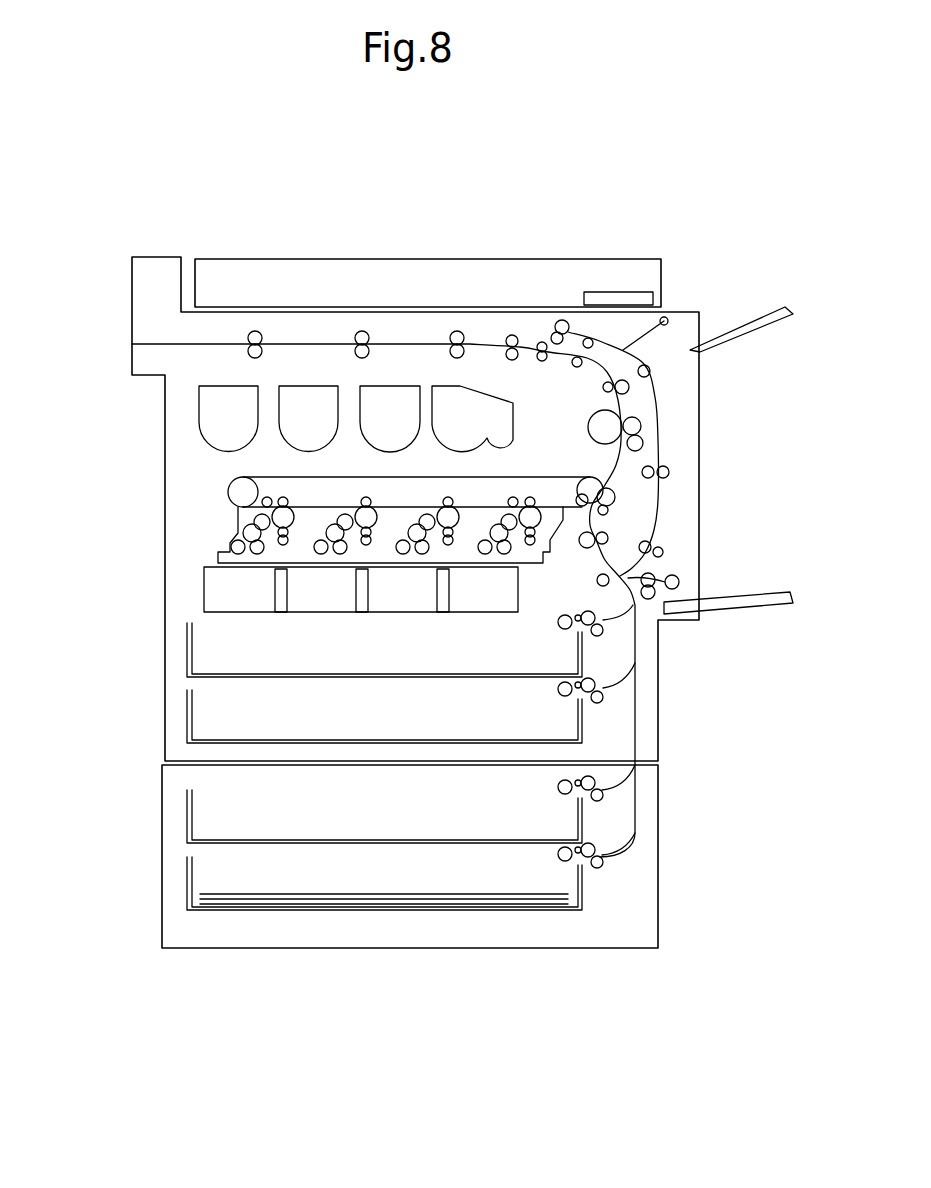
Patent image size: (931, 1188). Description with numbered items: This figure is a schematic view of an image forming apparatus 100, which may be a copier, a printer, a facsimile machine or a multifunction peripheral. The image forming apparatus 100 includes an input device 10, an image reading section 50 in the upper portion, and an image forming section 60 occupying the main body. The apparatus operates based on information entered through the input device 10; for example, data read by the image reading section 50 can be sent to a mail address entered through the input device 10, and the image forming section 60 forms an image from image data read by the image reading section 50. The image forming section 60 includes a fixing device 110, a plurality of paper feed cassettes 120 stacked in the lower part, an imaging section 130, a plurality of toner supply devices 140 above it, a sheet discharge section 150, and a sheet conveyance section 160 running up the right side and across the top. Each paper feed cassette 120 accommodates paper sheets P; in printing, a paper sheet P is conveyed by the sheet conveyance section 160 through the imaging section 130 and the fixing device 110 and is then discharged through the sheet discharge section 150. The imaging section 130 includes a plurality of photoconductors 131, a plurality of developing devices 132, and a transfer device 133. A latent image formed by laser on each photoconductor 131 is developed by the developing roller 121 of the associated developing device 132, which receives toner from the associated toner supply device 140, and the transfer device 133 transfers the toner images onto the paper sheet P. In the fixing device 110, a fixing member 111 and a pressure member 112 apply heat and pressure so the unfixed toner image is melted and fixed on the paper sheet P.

The input device 10 is at (654, 297).
The image reading section 50 is at (575, 252).
The image forming section 60 is at (742, 524).
The image forming apparatus 100 is at (430, 994).
The fixing device 110 is at (638, 438).
The fixing member 111 is at (607, 442).
The pressure member 112 is at (640, 426).
The paper feed cassette 120 is at (180, 720).
The developing roller 121 is at (354, 503).
The imaging section 130 is at (302, 546).
The photoconductor 131 is at (308, 505).
The developing device 132 is at (227, 535).
The transfer device 133 is at (220, 490).
The toner supply device 140 is at (190, 443).
The sheet discharge section 150 is at (150, 302).
The sheet conveyance section 160 is at (322, 325).
The paper sheet P is at (237, 903).